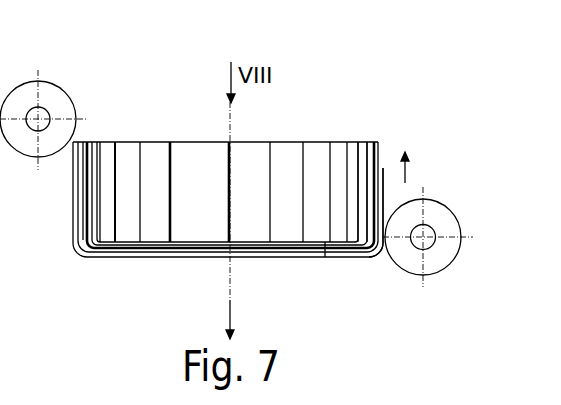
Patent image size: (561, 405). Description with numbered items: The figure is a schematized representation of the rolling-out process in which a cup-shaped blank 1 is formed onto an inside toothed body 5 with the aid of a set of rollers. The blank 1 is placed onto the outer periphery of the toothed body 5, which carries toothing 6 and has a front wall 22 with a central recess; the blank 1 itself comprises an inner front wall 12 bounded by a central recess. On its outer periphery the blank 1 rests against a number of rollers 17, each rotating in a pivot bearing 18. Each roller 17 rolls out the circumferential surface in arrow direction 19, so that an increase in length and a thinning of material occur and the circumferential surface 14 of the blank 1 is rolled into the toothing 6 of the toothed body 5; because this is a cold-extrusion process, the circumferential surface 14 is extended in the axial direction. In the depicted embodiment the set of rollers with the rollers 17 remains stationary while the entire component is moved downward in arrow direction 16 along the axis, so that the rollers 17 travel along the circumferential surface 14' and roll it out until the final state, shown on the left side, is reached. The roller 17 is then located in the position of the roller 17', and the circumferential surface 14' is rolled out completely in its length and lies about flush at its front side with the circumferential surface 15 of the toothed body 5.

The blank 1 is at (122, 258).
The toothed body 5 is at (158, 253).
The toothing 6 is at (125, 165).
The inner front wall 12 is at (345, 247).
The circumferential surface 14 is at (191, 195).
The circumferential surface 14' is at (427, 200).
The circumferential surface 15 is at (367, 175).
The arrow direction 16 is at (232, 318).
The roller 17 is at (450, 247).
The roller 17' is at (61, 111).
The pivot bearing 18 is at (460, 227).
The arrow direction 19 is at (408, 170).
The front wall 22 is at (363, 248).